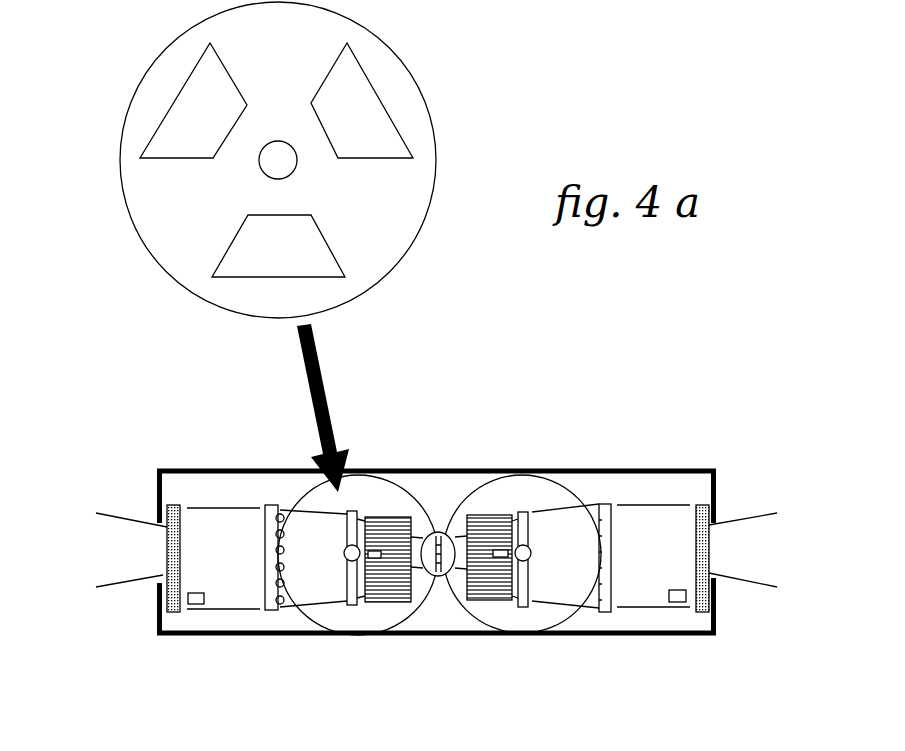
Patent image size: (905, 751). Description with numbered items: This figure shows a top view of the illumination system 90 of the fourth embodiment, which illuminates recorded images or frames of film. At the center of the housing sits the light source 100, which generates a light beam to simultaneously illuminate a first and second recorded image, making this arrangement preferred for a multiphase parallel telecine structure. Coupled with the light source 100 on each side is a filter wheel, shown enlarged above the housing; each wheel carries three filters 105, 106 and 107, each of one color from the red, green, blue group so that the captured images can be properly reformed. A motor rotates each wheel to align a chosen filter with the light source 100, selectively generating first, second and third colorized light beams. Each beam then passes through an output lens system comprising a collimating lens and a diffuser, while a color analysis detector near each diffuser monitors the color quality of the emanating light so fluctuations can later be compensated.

The illumination system 90 is at (697, 448).
The light source 100 is at (438, 531).
The filter 105 is at (187, 78).
The filter 106 is at (243, 277).
The filter 107 is at (388, 113).